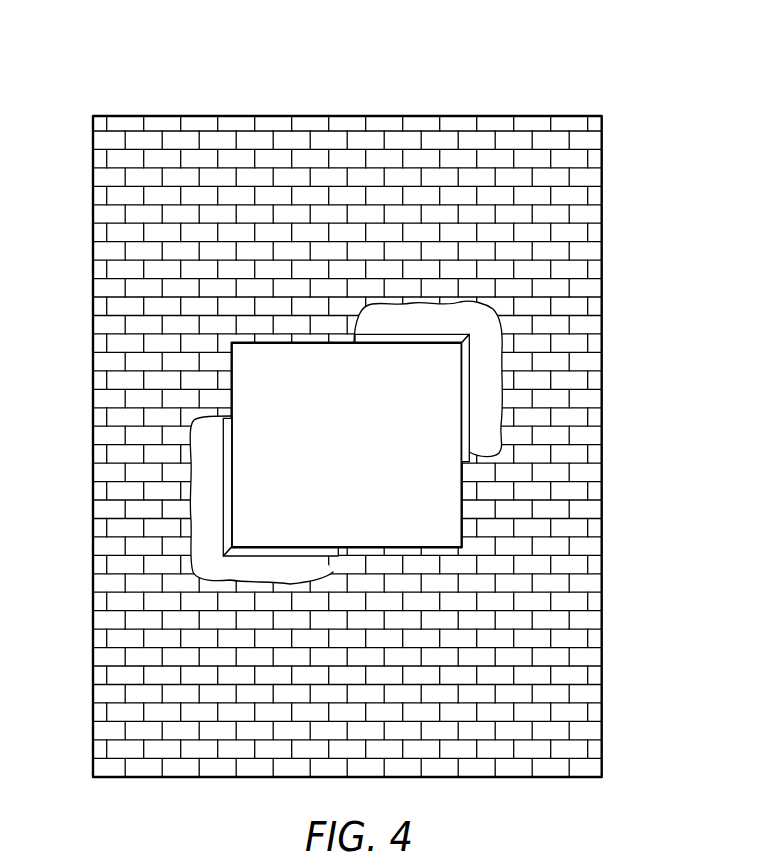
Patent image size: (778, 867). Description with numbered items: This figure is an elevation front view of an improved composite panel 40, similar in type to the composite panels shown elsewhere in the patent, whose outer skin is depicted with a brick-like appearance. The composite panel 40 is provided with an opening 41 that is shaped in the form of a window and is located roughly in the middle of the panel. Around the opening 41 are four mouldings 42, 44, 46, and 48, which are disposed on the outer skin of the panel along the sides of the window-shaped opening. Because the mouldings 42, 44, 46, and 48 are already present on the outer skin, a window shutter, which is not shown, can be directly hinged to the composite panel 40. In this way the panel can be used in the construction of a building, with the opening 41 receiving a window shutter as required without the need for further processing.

The composite panel 40 is at (132, 59).
The opening 41 is at (397, 470).
The moulding 42 is at (227, 468).
The moulding 44 is at (467, 418).
The moulding 46 is at (400, 338).
The moulding 48 is at (300, 552).